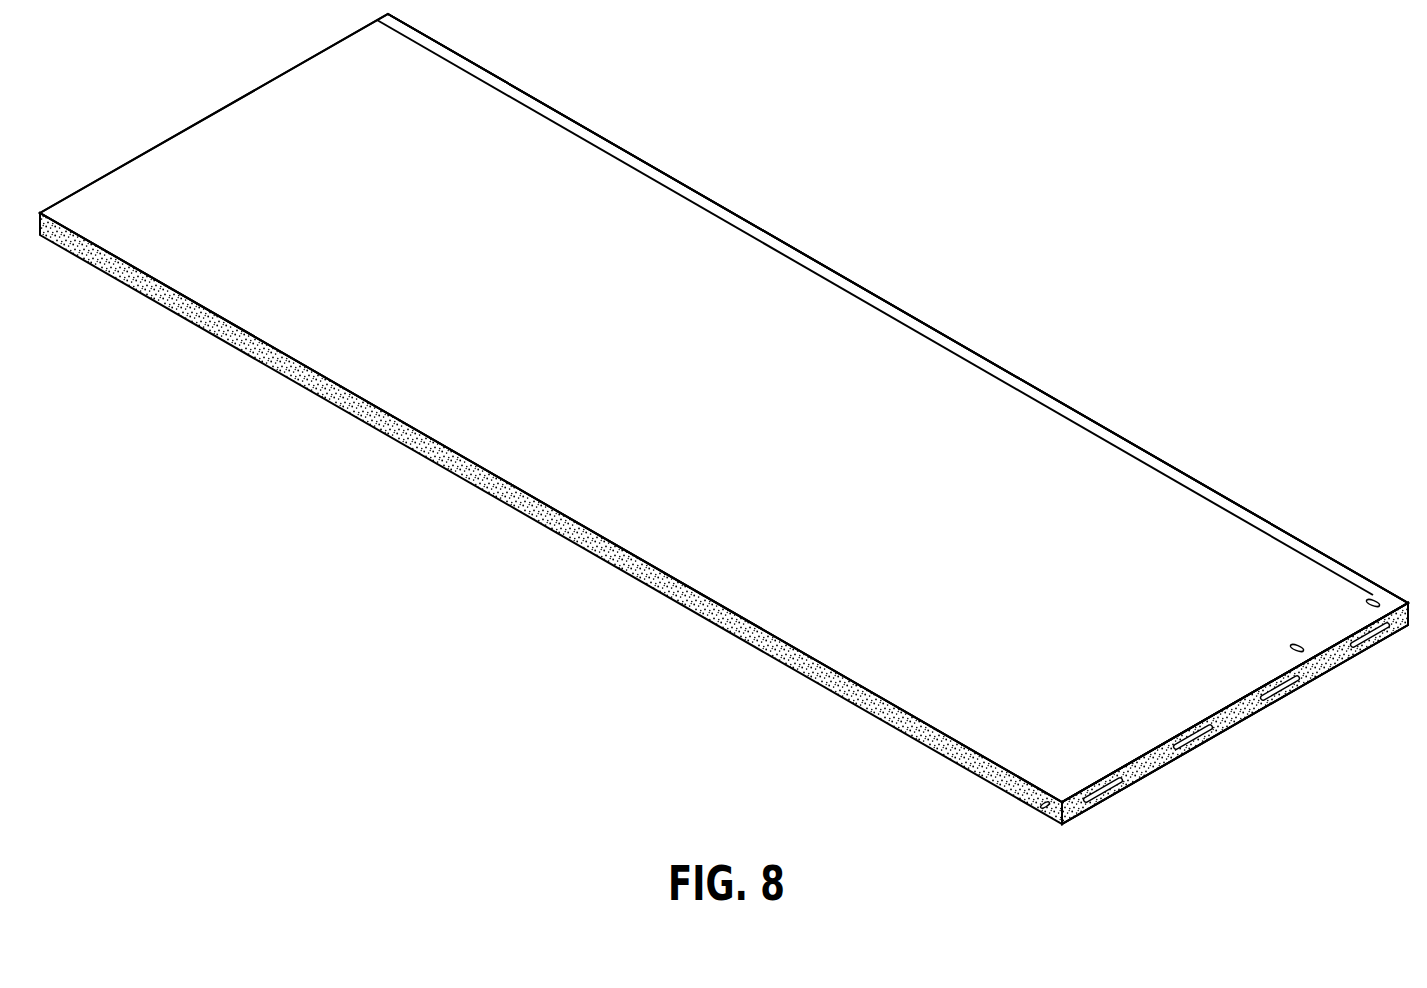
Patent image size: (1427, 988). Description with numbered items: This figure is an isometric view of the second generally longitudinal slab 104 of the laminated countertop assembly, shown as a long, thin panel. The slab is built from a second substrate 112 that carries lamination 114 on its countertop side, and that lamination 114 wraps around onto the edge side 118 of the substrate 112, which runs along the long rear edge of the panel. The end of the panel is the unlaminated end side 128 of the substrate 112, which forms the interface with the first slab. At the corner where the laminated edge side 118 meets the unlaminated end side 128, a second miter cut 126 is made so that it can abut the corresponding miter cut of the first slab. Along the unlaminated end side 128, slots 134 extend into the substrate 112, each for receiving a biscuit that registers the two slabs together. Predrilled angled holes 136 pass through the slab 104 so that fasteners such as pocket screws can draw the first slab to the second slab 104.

The second generally longitudinal slab 104 is at (950, 208).
The second substrate 112 is at (1048, 440).
The lamination 114 is at (657, 168).
The edge side 118 is at (962, 344).
The second miter cut 126 is at (1407, 601).
The unlaminated end side 128 is at (1242, 717).
The slots 134 is at (1378, 645).
The predrilled angled holes 136 is at (1295, 644).